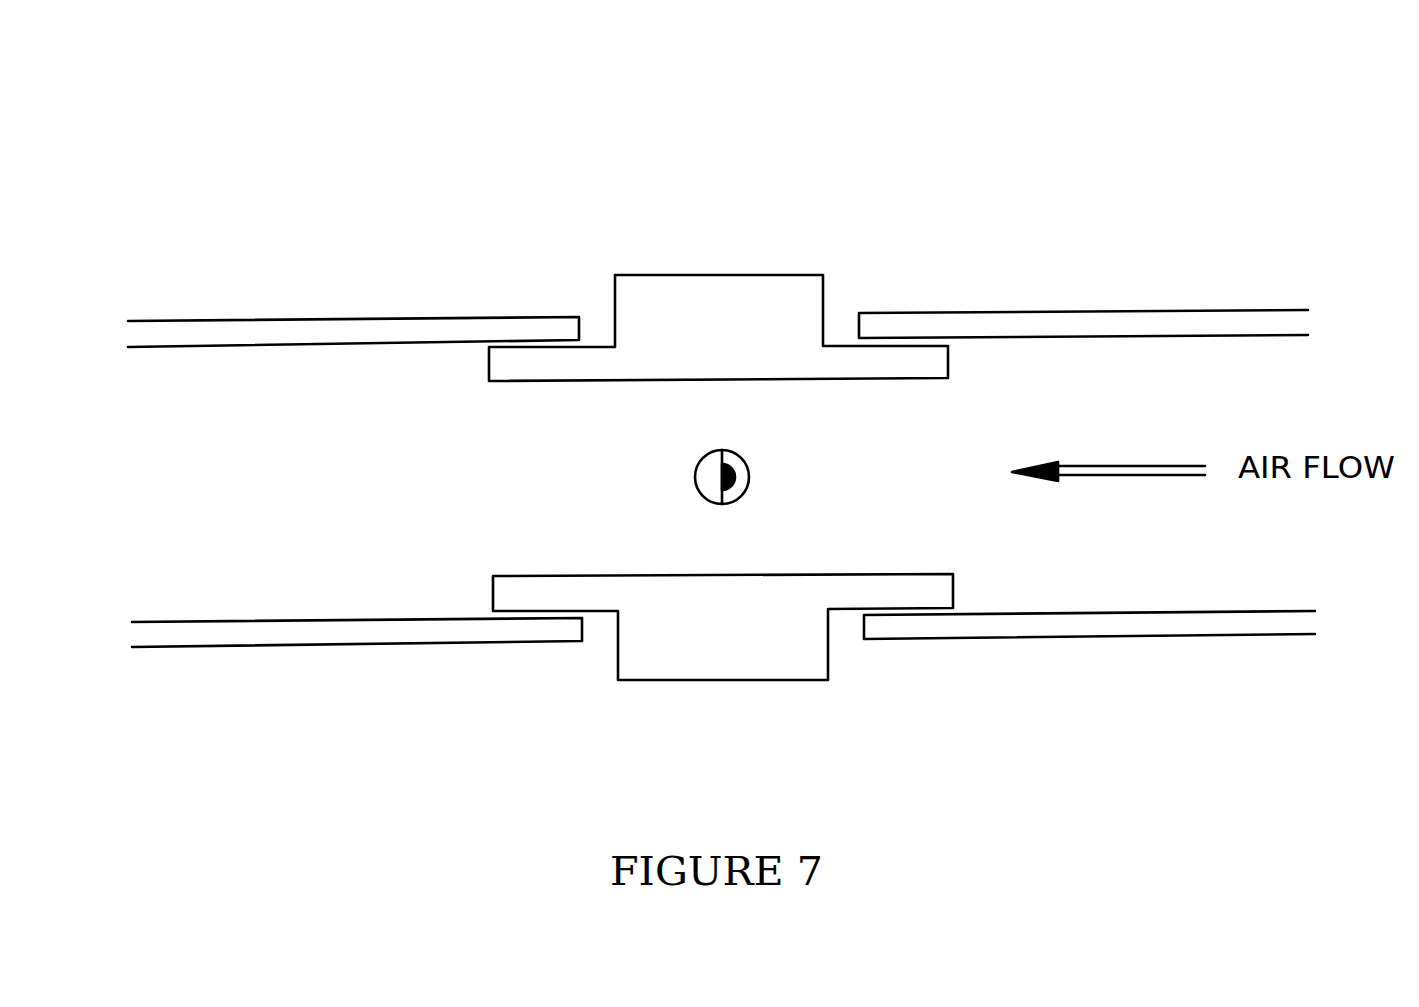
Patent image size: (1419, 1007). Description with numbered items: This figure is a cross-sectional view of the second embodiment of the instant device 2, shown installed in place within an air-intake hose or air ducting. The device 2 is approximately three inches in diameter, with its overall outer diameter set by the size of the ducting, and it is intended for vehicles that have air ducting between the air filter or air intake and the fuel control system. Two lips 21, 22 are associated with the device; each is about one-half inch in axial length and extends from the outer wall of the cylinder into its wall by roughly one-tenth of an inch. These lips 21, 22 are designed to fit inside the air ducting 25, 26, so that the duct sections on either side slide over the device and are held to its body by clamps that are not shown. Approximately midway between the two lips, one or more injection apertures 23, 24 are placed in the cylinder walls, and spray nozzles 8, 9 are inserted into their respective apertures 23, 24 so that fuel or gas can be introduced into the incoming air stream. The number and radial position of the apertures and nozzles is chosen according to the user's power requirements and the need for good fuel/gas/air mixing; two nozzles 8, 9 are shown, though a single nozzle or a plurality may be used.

The instant device 2 is at (975, 117).
The spray nozzle 8 is at (812, 466).
The spray nozzle 9 is at (812, 466).
The lip 21 is at (845, 610).
The lip 22 is at (607, 615).
The injection aperture 23 is at (730, 682).
The injection aperture 24 is at (691, 477).
The air ducting 25 is at (1050, 310).
The air ducting 26 is at (478, 317).